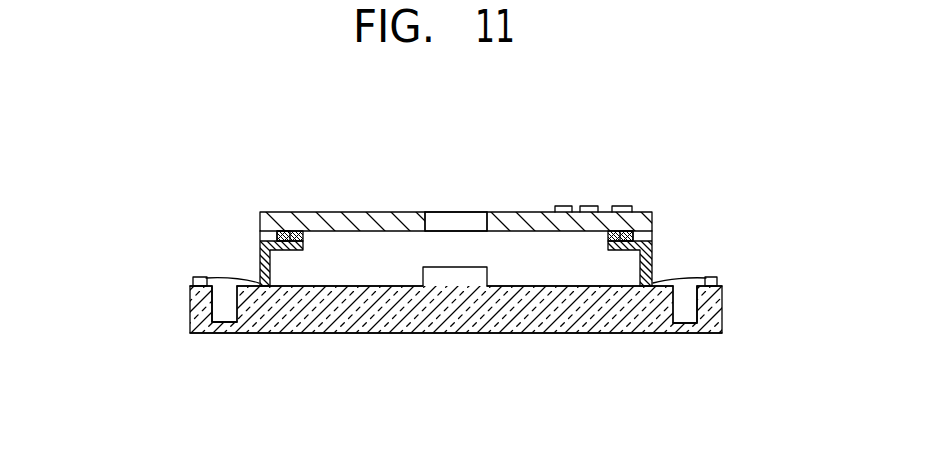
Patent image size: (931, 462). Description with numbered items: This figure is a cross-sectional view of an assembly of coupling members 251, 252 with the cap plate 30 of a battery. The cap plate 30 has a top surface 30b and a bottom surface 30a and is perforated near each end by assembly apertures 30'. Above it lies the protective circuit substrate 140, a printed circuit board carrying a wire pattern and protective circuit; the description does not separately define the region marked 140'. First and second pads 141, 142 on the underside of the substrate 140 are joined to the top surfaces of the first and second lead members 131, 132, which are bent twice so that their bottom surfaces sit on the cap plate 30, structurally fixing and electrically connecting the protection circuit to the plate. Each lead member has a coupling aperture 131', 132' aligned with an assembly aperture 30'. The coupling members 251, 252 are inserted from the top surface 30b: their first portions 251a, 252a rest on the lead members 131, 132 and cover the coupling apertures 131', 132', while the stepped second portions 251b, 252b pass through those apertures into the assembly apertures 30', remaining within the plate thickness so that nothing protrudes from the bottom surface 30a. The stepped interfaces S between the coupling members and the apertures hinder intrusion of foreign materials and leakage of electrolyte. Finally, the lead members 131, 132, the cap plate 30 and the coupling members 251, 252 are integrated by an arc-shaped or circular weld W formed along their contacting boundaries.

The cap plate 30 is at (462, 334).
The bottom surface of cap plate 30a is at (530, 333).
The top surface of cap plate 30b is at (530, 286).
The assembly apertures 30' is at (454, 344).
The protective circuit substrate 140 is at (450, 183).
The circuit board portion 140' is at (456, 183).
The first lead member 131 is at (606, 188).
The first pad 141 is at (624, 240).
The second lead member 132 is at (303, 188).
The second pad 142 is at (283, 231).
The coupling aperture of first lead member 131' is at (649, 246).
The coupling aperture of second lead member 132' is at (260, 246).
The weld W is at (201, 277).
The stepped interfaces S is at (673, 292).
The coupling member 251 is at (756, 298).
The first portion of coupling member 251a is at (708, 281).
The second portion of coupling member 251b is at (698, 305).
The coupling member 252 is at (152, 297).
The first portion of coupling member 252a is at (198, 284).
The second portion of coupling member 252b is at (213, 303).